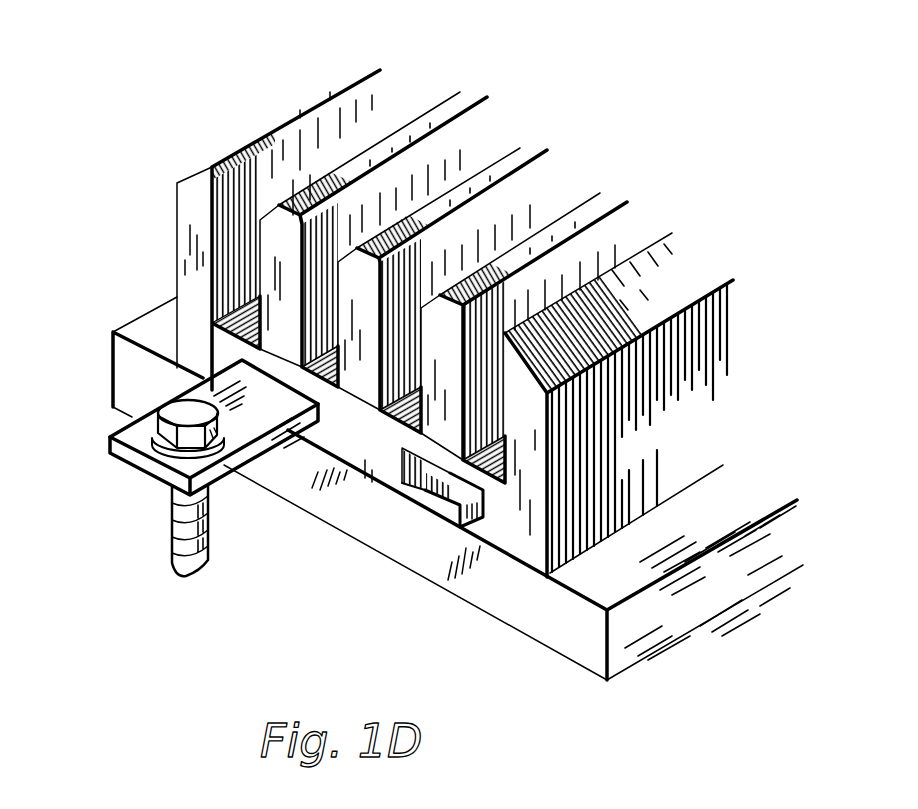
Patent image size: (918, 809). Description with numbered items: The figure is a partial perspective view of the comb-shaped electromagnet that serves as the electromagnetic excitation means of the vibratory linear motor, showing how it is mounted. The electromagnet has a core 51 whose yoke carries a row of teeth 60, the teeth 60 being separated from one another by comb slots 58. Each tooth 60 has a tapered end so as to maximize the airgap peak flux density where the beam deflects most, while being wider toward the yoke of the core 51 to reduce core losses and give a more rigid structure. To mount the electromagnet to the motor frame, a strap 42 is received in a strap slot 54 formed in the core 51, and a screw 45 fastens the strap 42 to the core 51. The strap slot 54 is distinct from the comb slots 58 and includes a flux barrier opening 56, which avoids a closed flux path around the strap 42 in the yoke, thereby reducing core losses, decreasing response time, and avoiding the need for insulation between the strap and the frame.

The strap 42 is at (220, 474).
The screw 45 is at (172, 500).
The core 51 is at (185, 292).
The strap slot 54 is at (403, 483).
The flux barrier opening 56 is at (452, 510).
The comb slot 58 is at (367, 128).
The tooth 60 is at (280, 237).